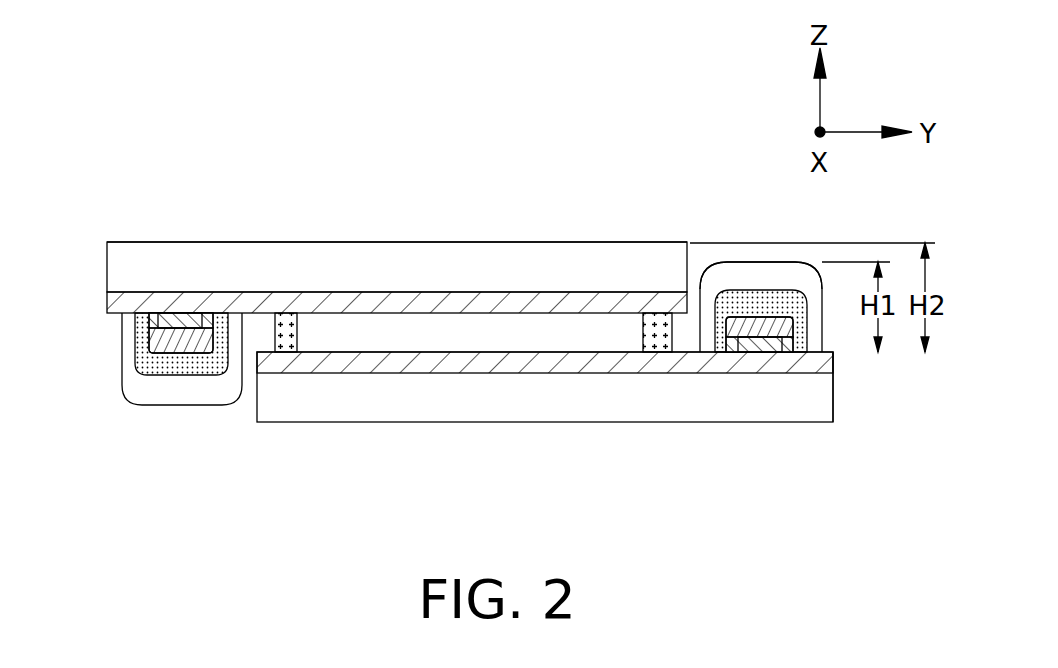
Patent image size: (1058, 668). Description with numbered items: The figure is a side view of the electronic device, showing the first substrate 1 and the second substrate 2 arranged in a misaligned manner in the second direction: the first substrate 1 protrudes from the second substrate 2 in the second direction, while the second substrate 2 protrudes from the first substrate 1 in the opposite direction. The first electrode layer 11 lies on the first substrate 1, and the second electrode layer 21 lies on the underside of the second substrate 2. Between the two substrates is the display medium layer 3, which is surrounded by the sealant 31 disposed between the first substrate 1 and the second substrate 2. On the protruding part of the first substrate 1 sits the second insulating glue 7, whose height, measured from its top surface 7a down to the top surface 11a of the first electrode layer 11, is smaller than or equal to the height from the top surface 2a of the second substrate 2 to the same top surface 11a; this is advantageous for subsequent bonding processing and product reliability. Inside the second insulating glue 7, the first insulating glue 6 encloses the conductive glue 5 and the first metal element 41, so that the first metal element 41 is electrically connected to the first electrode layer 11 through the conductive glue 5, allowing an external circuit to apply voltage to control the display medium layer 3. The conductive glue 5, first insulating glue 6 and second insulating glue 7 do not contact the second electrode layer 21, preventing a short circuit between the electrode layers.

The first substrate 1 is at (330, 405).
The first electrode layer 11 is at (286, 365).
The top surface of the first electrode layer 11a is at (828, 351).
The second substrate 2 is at (113, 266).
The second electrode layer 21 is at (112, 303).
The top surface of the second substrate 2a is at (455, 242).
The display medium layer 3 is at (358, 328).
The sealant 31 is at (291, 322).
The conductive glue 5 is at (735, 345).
The first insulating glue 6 is at (718, 345).
The second insulating glue 7 is at (707, 350).
The top surface of the second insulating glue 7a is at (757, 262).
The first metal element 41 is at (762, 347).